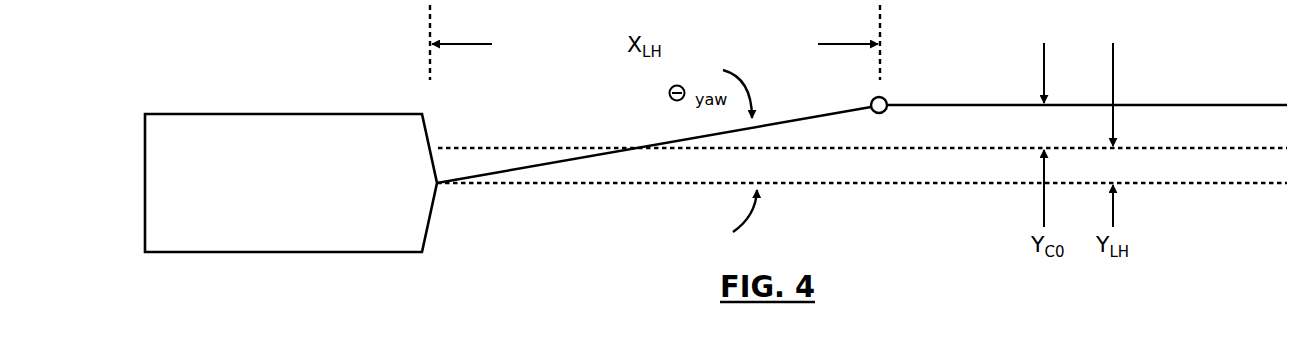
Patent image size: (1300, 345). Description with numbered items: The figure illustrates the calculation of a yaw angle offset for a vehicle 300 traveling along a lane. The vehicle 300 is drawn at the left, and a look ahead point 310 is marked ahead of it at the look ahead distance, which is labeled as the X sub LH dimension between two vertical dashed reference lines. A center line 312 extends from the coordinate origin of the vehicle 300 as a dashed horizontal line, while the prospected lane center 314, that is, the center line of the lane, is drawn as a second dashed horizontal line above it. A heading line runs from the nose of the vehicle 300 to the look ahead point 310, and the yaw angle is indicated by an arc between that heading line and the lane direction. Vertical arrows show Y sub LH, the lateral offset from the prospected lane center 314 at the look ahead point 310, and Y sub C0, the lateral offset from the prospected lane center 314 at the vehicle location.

The vehicle 300 is at (290, 114).
The look ahead point 310 is at (883, 97).
The center line from the coordinate origin of the vehicle 312 is at (1213, 184).
The prospected lane center 314 is at (890, 149).